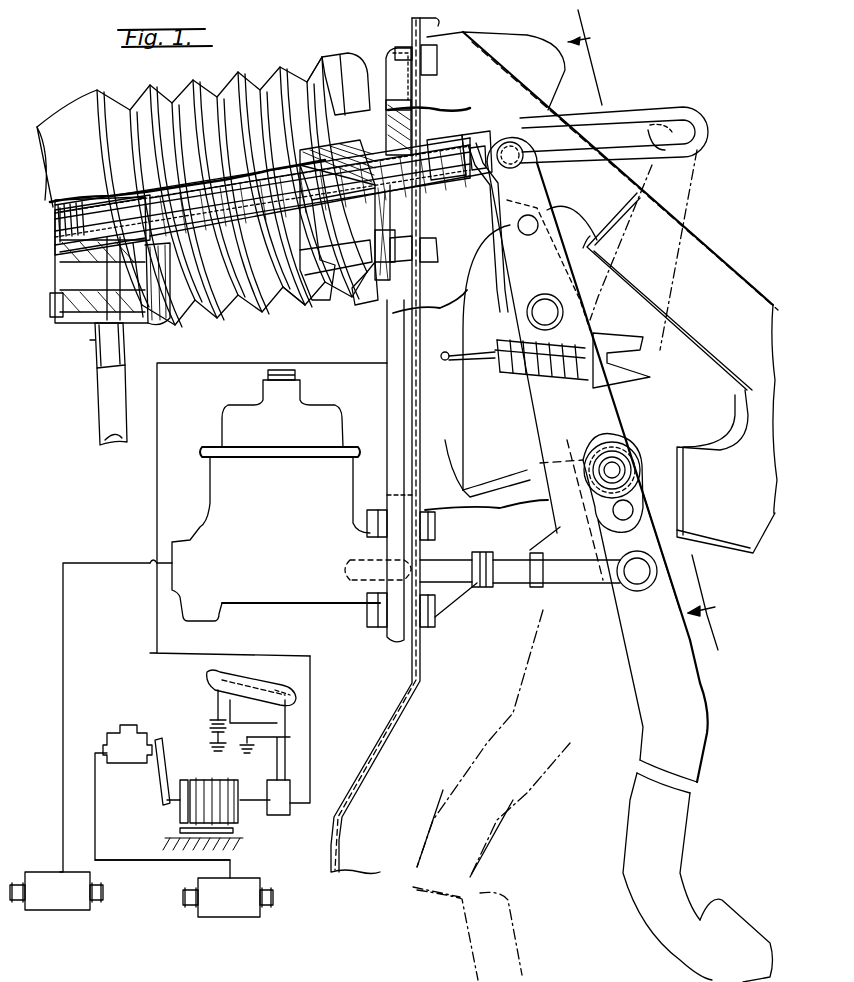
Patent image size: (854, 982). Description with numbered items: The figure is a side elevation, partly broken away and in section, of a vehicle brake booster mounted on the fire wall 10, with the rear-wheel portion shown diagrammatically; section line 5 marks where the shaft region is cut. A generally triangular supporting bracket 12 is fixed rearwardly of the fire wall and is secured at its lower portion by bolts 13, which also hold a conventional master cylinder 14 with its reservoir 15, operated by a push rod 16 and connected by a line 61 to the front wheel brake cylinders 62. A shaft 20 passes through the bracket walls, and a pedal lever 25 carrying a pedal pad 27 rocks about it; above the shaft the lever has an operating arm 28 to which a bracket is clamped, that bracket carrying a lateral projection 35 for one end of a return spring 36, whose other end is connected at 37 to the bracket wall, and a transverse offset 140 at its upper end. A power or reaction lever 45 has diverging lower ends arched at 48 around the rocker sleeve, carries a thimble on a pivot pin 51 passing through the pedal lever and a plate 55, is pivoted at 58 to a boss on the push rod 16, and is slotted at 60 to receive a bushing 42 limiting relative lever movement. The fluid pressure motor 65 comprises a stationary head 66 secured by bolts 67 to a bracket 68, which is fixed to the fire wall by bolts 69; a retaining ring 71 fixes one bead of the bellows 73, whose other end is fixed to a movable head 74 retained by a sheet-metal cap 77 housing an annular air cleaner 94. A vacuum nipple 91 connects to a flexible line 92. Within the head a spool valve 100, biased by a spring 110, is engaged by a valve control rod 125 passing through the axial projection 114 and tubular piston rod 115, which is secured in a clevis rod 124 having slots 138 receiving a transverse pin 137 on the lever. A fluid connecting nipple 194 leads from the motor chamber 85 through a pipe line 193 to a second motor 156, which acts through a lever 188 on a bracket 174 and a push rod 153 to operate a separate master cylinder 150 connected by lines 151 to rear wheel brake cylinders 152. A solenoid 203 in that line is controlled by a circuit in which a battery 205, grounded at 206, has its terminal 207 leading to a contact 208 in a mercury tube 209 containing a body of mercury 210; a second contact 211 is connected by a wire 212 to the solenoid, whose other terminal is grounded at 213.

The fire wall 10 is at (410, 20).
The supporting bracket 12 is at (735, 298).
The section line 5 is at (645, 330).
The power or reaction lever 45 is at (555, 192).
The transverse pin 137 is at (512, 140).
The slots 138 is at (630, 128).
The pin 42 is at (545, 300).
The slot 60 is at (560, 290).
The operating arm 28 is at (612, 415).
The transverse offset 140 is at (492, 262).
The lateral projection 35 is at (603, 340).
The return spring 36 is at (512, 370).
The spring connection 37 is at (450, 352).
The pedal lever 25 is at (700, 710).
The pedal pad 27 is at (515, 905).
The shaft 20 is at (617, 470).
The arched portions 48 is at (582, 478).
The plate 55 is at (645, 490).
The pivot pin 51 is at (623, 520).
The pivot 58 is at (638, 590).
The bellows 73 is at (218, 95).
The fluid pressure motor 65 is at (307, 82).
The stationary head 66 is at (350, 70).
The axial projection 114 is at (190, 185).
The tubular piston rod 115 is at (283, 170).
The spool valve 100 is at (105, 205).
The valve control rod 125 is at (436, 155).
The clevis rod 124 is at (460, 145).
The bracket 68 is at (422, 212).
The retaining ring 71 is at (387, 233).
The bolts 67 is at (428, 245).
The bolts 69 is at (438, 66).
The spring 110 is at (55, 228).
The sheet-metal cap 77 is at (55, 262).
The annular air cleaner 94 is at (48, 295).
The movable head 74 is at (140, 315).
The nipple 91 is at (90, 340).
The flexible line 92 is at (95, 420).
The motor chamber 85 is at (283, 300).
The fluid connecting nipple 194 is at (385, 310).
The reservoir 15 is at (272, 498).
The master cylinder 14 is at (250, 605).
The bolts 13 is at (437, 523).
The push rod 16 is at (445, 568).
The line 61 is at (118, 583).
The separate master cylinder 150 is at (110, 730).
The push rod 153 is at (145, 770).
The lever 188 is at (155, 792).
The bracket 174 is at (175, 828).
The motor 156 is at (240, 826).
The solenoid 203 is at (300, 778).
The pipe line 193 is at (312, 755).
The contact 208 is at (215, 676).
The second contact 211 is at (252, 686).
The tube 209 is at (285, 686).
The terminal 207 is at (210, 695).
The battery 205 is at (212, 725).
The ground 206 is at (212, 744).
The body of mercury 210 is at (296, 700).
The wire 212 is at (300, 723).
The ground 213 is at (240, 755).
The lines 151 is at (175, 870).
The front wheel brake cylinders 62 is at (78, 905).
The rear wheel brake cylinders 152 is at (203, 905).